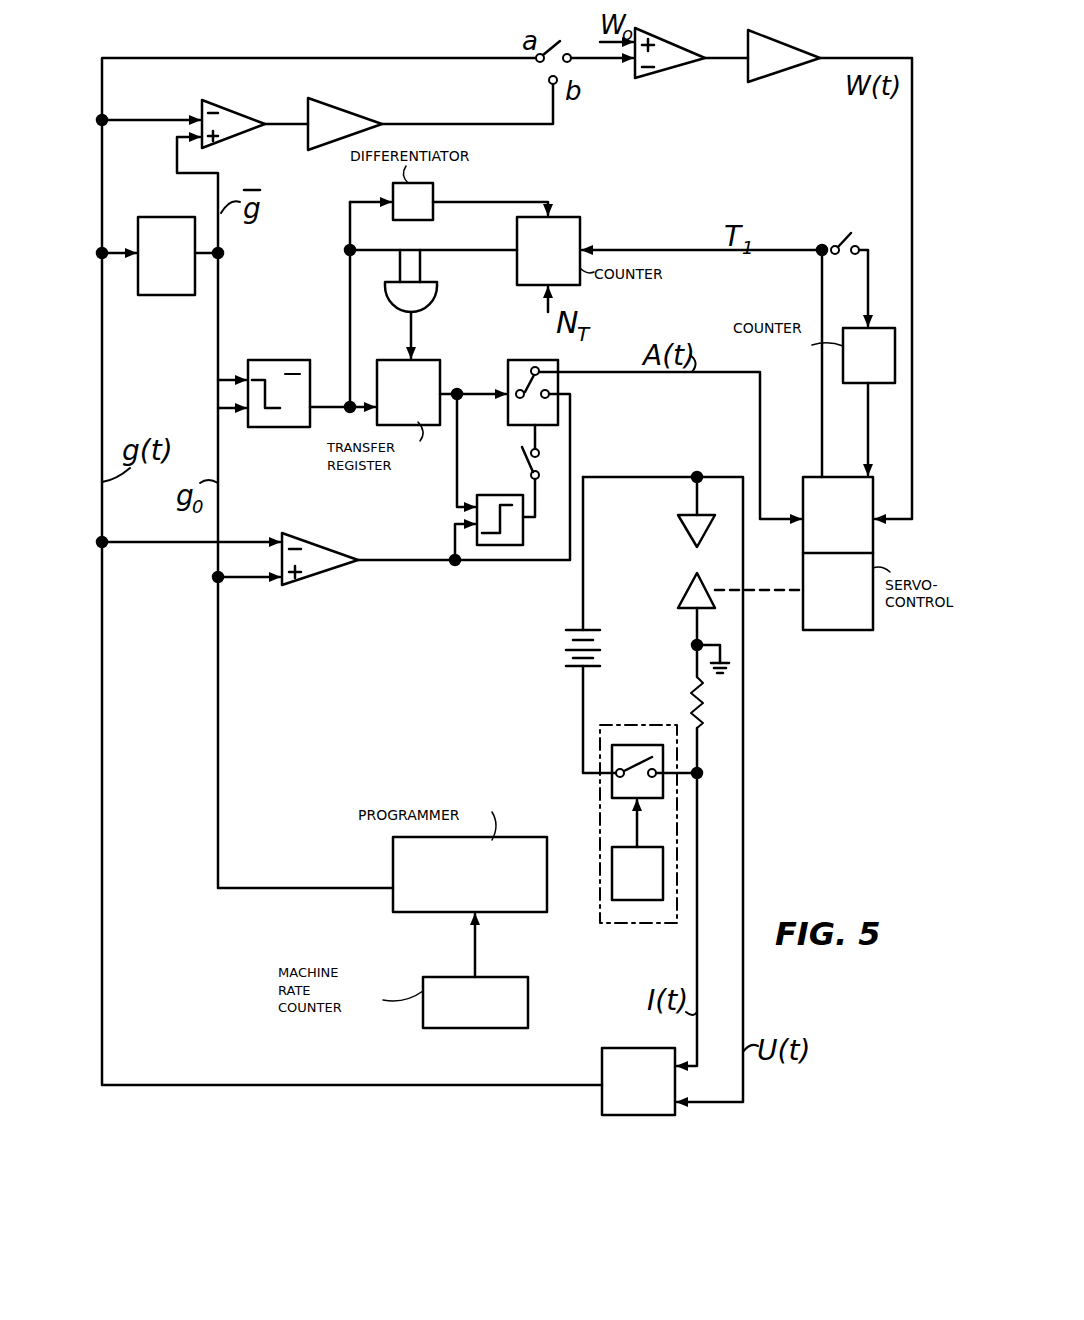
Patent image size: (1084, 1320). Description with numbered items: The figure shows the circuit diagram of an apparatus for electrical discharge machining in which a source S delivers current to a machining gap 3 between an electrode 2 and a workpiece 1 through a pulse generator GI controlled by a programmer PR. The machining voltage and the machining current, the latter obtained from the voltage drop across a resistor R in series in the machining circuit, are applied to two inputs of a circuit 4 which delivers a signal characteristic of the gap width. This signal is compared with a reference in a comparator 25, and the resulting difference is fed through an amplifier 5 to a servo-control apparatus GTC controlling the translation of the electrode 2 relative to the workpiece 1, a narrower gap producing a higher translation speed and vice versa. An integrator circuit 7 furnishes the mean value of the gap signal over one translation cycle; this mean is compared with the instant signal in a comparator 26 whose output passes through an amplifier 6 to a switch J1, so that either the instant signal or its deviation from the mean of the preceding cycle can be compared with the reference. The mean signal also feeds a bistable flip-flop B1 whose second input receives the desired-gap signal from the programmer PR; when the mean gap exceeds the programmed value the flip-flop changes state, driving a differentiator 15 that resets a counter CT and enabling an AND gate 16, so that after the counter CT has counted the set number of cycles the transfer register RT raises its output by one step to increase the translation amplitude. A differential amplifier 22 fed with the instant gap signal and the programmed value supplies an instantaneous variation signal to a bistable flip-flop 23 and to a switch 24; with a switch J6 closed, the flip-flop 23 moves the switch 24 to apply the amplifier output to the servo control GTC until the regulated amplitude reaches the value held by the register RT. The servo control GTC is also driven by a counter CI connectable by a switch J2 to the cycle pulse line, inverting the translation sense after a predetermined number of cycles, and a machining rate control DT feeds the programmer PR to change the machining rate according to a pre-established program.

The workpiece 1 is at (678, 588).
The electrode 2 is at (678, 522).
The machining gap 3 is at (700, 562).
The circuit 4 is at (602, 1072).
The amplifier 5 is at (798, 46).
The amplifier 6 is at (363, 112).
The integrator circuit 7 is at (158, 217).
The differentiator 15 is at (427, 198).
The AND gate 16 is at (430, 296).
The differential amplifier 22 is at (320, 546).
The bistable flip-flop 23 is at (523, 530).
The switch 24 is at (558, 362).
The comparator 25 is at (655, 78).
The comparator 26 is at (224, 102).
The counter CT is at (582, 216).
The counter CI is at (877, 328).
The transfer register RT is at (433, 362).
The bistable flip-flop B1 is at (275, 360).
The servo-control apparatus GTC is at (848, 630).
The pulse generator GI is at (645, 923).
The programmer PR is at (470, 874).
The machining rate control DT is at (475, 1002).
The source S is at (592, 630).
The resistor R is at (691, 708).
The switch J1 is at (561, 49).
The switch J2 is at (836, 230).
The switch J6 is at (508, 454).